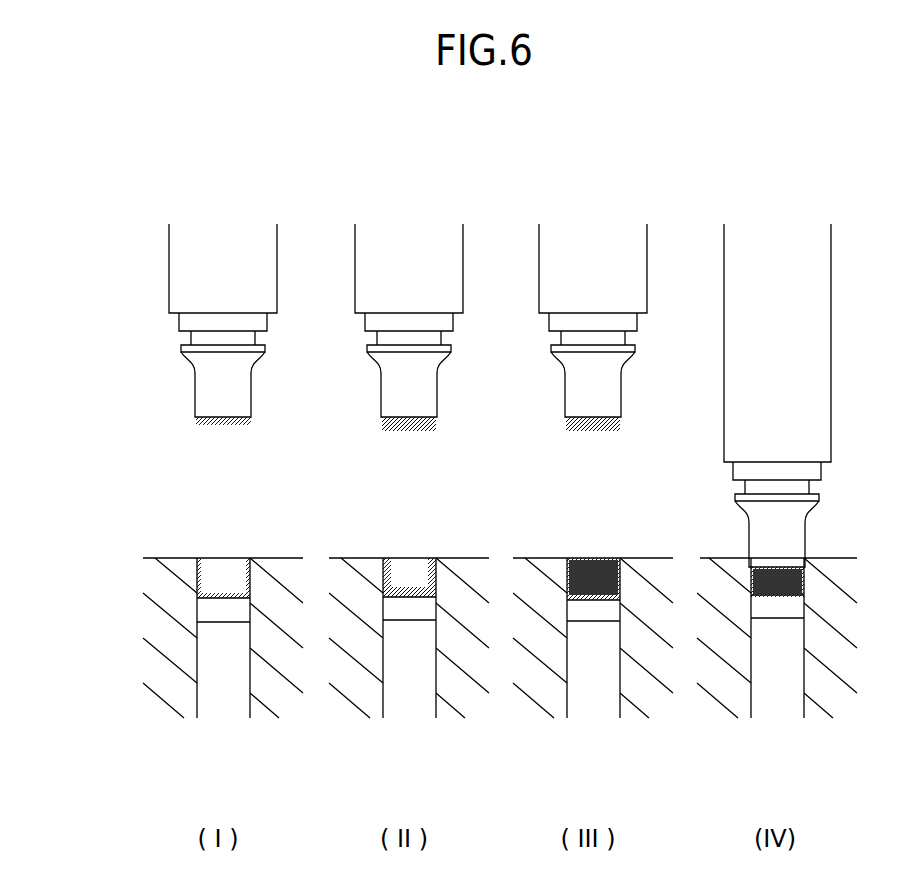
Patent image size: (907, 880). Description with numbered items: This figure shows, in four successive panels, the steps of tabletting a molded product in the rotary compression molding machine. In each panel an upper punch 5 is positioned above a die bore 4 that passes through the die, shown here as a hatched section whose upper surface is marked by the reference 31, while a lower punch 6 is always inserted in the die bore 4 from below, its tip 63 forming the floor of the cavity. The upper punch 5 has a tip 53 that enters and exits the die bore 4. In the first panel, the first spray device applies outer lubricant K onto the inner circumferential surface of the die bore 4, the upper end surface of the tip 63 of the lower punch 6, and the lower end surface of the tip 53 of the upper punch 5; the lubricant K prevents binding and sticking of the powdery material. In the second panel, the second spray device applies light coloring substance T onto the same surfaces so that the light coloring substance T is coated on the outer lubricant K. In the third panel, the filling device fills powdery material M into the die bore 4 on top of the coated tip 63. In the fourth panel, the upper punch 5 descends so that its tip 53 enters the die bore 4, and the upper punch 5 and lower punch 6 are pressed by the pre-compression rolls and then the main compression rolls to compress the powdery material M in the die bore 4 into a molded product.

The upper punch 5 is at (465, 352).
The tip 53 is at (195, 383).
The outer lubricant K is at (222, 427).
The light coloring substance T is at (418, 432).
The powdery material M is at (592, 558).
The substrate surface 31 is at (171, 556).
The die bore 4 is at (252, 580).
The tip 63 is at (197, 603).
The lower punch 6 is at (223, 720).